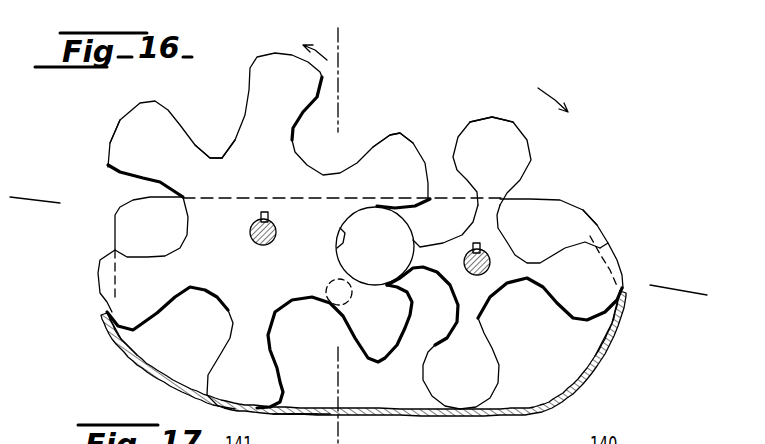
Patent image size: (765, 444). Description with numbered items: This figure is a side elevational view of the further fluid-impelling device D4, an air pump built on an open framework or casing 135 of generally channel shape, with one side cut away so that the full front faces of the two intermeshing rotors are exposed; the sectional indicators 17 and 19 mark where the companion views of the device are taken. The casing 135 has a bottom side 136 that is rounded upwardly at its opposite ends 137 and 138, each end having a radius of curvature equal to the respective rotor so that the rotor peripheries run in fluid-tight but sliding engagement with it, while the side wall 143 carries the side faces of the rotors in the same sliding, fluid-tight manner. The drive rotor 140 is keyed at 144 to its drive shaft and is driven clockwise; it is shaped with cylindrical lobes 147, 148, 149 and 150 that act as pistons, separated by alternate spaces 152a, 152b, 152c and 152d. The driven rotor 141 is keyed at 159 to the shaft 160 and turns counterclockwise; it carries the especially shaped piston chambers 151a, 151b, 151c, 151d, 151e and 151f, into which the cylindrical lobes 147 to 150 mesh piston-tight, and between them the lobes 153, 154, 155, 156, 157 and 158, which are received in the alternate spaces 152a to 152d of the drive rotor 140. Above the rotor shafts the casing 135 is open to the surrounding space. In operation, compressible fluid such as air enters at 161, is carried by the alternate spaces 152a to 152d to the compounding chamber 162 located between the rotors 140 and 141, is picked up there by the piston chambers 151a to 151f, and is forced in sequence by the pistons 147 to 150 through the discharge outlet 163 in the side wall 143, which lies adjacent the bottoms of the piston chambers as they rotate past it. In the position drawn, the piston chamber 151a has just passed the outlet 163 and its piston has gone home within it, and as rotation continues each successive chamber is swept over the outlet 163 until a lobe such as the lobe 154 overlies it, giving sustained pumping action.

The section line 17- 17 is at (26, 187).
The section line 19- 19 is at (351, 61).
The fluid-impelling device D4 is at (616, 146).
The open framework or casing 135 is at (288, 422).
The bottom side 136 is at (447, 418).
The rounded end of bottom side 137 is at (595, 347).
The rounded end of bottom side 138 is at (117, 343).
The drive rotor 140 is at (480, 112).
The driven rotor 141 is at (111, 126).
The side wall 143 is at (143, 222).
The key 144 is at (483, 247).
The cylindrical lobe 147 is at (380, 267).
The cylindrical lobe 148 is at (470, 384).
The cylindrical lobe 149 is at (585, 301).
The cylindrical lobe 150 is at (500, 167).
The piston chamber 151a is at (338, 235).
The piston chamber 151b is at (285, 312).
The piston chamber 151c is at (207, 290).
The piston chamber 151d is at (147, 187).
The piston chamber 151e is at (223, 133).
The piston chamber 151f is at (337, 153).
The alternate space 152a is at (430, 299).
The alternate space 152b is at (503, 347).
The alternate space 152c is at (515, 208).
The alternate space 152d is at (427, 223).
The lobe of driven rotor 153 is at (374, 345).
The lobe of driven rotor 154 is at (257, 378).
The lobe of driven rotor 155 is at (108, 280).
The lobe of driven rotor 156 is at (140, 127).
The lobe of driven rotor 157 is at (273, 78).
The lobe of driven rotor 158 is at (390, 163).
The key 159 is at (267, 215).
The shaft 160 is at (255, 240).
The fluid inlet 161 is at (634, 253).
The compounding chamber 162 is at (334, 405).
The discharge outlet 163 is at (327, 292).